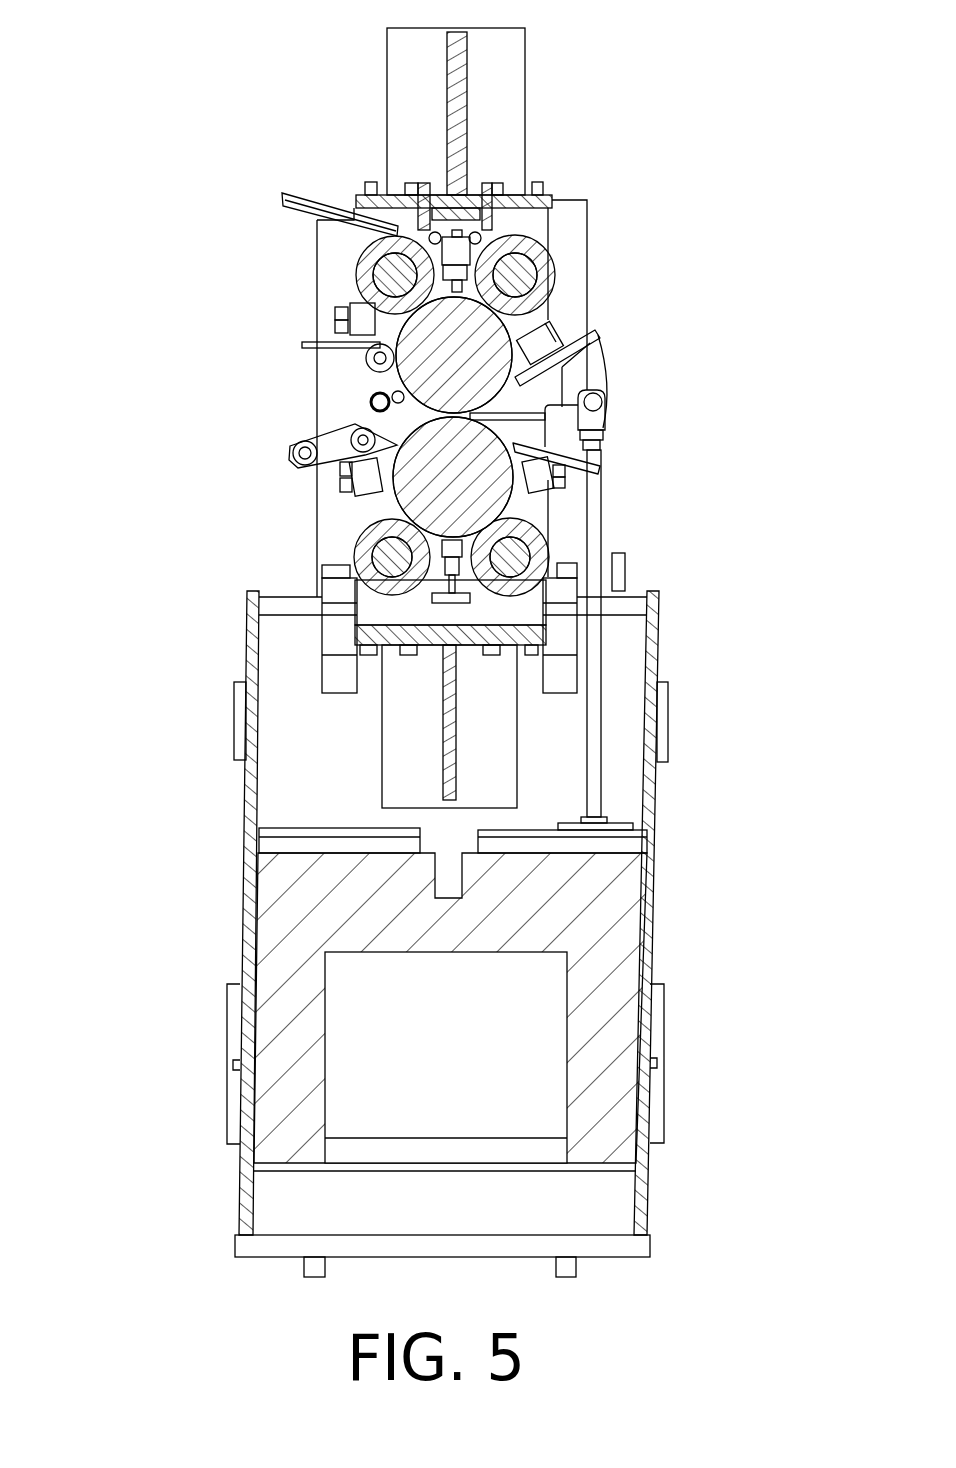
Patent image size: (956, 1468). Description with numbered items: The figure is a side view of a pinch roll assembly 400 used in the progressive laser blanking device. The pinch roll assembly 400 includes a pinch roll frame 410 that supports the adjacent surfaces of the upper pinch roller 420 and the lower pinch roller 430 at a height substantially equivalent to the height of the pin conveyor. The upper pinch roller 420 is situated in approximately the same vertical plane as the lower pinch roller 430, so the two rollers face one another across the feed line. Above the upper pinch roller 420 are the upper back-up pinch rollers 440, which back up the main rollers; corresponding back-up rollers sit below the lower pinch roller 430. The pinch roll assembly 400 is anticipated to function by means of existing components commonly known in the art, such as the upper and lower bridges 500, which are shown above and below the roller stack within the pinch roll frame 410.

The pinch roll assembly 400 is at (218, 300).
The pinch roll frame 410 is at (658, 905).
The upper pinch roller 420 is at (473, 347).
The lower pinch roller 430 is at (470, 472).
The upper back-up pinch rollers 440 is at (537, 267).
The upper and lower bridges 500 is at (527, 93).